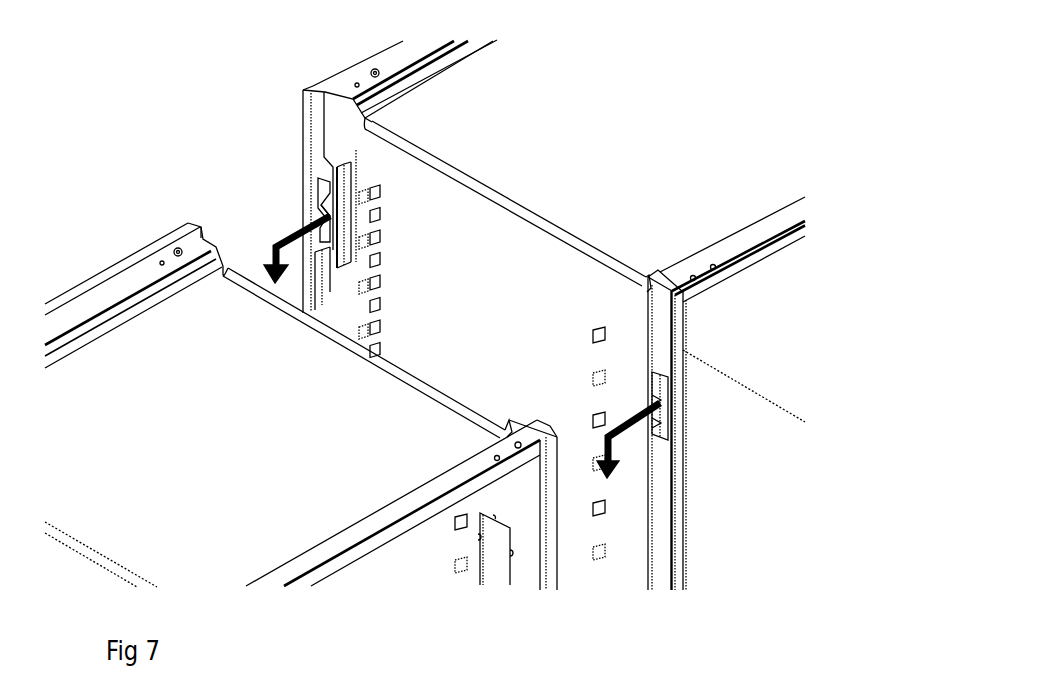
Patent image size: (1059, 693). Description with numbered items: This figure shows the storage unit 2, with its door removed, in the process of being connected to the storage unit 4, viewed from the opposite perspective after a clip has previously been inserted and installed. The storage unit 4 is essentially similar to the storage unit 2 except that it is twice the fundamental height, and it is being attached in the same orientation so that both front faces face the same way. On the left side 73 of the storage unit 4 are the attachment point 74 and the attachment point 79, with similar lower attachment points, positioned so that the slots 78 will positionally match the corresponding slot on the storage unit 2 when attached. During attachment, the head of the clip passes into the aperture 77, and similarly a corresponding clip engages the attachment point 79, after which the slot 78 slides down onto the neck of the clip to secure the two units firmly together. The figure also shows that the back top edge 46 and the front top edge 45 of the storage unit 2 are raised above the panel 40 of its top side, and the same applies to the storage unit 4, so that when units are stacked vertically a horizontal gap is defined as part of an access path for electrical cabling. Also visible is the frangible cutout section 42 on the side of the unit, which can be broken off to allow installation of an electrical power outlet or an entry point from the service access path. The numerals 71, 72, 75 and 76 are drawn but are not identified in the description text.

The storage unit 2 is at (134, 293).
The storage unit 4 is at (391, 79).
The panel 40 is at (210, 407).
The frangible cutout section 42 is at (495, 538).
The front top edge 45 is at (355, 530).
The back top edge 46 is at (87, 313).
The slot 71 is at (418, 53).
The side beam 72 is at (604, 162).
The left side 73 is at (518, 282).
The attachment point 74 is at (333, 217).
The plate top 75 is at (343, 166).
The connector plate 76 is at (367, 194).
The aperture 77 is at (327, 252).
The slot 78 is at (326, 214).
The attachment point 79 is at (650, 375).